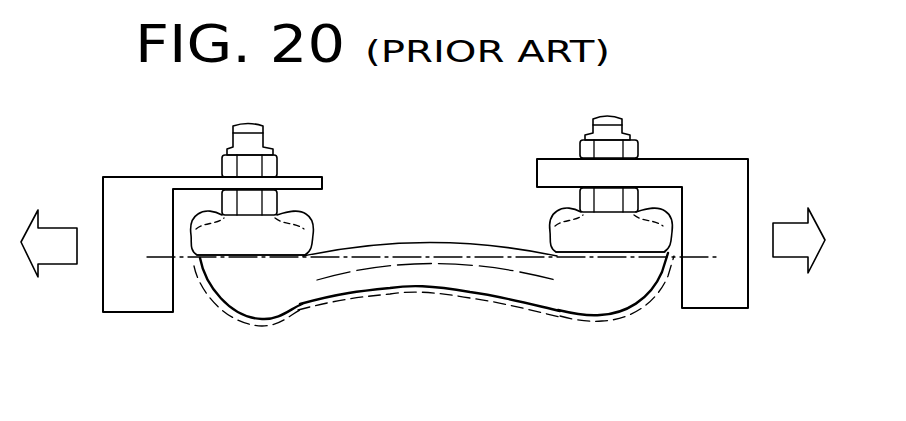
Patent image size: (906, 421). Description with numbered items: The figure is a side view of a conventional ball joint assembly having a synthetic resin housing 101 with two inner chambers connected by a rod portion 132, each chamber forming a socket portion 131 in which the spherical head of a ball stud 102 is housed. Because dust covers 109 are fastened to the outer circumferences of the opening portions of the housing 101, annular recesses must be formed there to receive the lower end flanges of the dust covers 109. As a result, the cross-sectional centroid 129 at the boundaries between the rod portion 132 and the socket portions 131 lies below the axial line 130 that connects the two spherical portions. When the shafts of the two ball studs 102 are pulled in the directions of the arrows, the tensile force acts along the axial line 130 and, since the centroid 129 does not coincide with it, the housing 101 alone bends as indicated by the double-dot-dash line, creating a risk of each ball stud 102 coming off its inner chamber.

The housing 101 is at (434, 263).
The ball stud 102 is at (262, 140).
The dust cover 109 is at (308, 217).
The cross-sectional centroid 129 is at (533, 282).
The axial line 130 is at (400, 266).
The socket portion 131 is at (271, 303).
The rod portion 132 is at (432, 281).